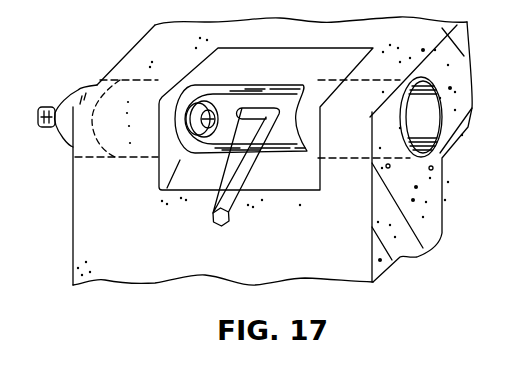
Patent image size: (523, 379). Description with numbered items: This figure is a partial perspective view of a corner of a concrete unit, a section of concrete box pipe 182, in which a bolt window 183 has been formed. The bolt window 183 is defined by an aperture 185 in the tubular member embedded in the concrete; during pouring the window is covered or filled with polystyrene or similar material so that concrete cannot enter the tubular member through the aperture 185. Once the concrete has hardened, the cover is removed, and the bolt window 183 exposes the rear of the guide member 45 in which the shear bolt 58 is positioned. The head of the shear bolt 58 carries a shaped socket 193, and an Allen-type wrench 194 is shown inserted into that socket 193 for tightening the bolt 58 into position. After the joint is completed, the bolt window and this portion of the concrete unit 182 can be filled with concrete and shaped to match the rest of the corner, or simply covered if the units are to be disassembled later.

The guide member 45 is at (133, 58).
The shear bolt 58 is at (183, 110).
The concrete box pipe 182 is at (319, 263).
The bolt window 183 is at (278, 105).
The aperture 185 is at (305, 90).
The shaped socket 193 is at (220, 108).
The Allen-type wrench 194 is at (237, 202).